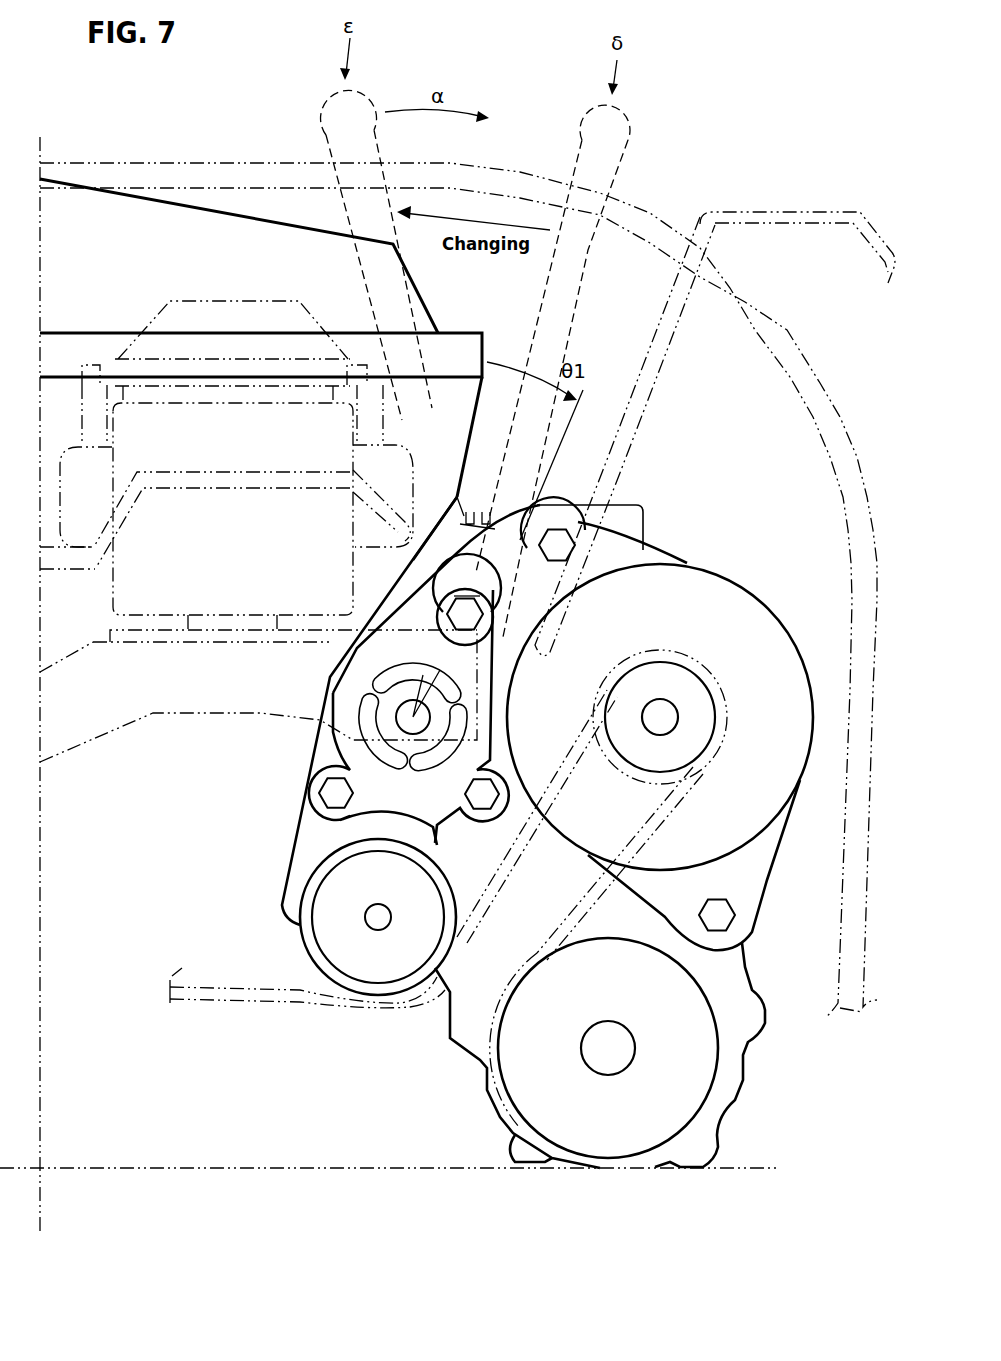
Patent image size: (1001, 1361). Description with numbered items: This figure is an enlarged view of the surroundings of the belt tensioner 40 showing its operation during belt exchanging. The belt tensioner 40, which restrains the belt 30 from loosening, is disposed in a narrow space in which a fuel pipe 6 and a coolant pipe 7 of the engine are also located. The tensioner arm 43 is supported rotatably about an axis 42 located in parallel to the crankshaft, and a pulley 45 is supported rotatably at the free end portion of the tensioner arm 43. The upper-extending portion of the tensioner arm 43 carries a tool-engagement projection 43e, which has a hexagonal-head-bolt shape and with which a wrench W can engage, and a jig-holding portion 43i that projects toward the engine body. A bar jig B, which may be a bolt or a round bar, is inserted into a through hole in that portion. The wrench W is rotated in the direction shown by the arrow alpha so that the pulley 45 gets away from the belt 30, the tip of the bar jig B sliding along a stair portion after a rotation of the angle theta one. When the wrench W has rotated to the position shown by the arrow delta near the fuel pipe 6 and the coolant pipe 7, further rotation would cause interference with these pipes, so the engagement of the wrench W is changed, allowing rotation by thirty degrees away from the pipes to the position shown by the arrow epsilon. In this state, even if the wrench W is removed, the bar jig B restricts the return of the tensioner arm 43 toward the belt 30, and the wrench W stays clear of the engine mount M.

The fuel pipe 6 is at (788, 210).
The coolant pipe 7 is at (825, 391).
The belt 30 is at (311, 1002).
The belt tensioner 40 is at (299, 741).
The axis 42 is at (410, 716).
The tensioner arm 43 is at (366, 822).
The tool-engagement projection 43e is at (433, 607).
The jig-holding portion 43i is at (505, 568).
The pulley 45 is at (372, 920).
The engine mount M is at (202, 289).
The bar jig B is at (457, 493).
The wrench W is at (573, 127).